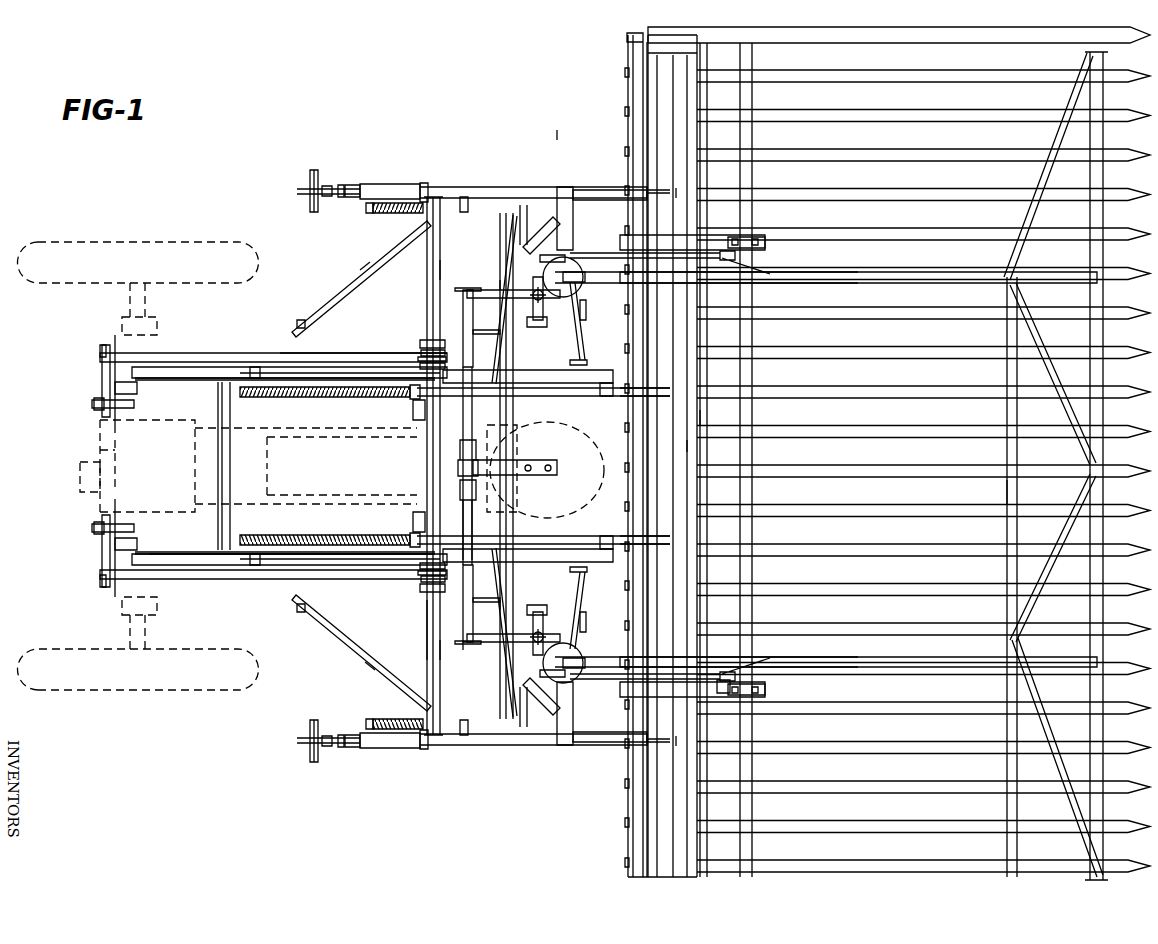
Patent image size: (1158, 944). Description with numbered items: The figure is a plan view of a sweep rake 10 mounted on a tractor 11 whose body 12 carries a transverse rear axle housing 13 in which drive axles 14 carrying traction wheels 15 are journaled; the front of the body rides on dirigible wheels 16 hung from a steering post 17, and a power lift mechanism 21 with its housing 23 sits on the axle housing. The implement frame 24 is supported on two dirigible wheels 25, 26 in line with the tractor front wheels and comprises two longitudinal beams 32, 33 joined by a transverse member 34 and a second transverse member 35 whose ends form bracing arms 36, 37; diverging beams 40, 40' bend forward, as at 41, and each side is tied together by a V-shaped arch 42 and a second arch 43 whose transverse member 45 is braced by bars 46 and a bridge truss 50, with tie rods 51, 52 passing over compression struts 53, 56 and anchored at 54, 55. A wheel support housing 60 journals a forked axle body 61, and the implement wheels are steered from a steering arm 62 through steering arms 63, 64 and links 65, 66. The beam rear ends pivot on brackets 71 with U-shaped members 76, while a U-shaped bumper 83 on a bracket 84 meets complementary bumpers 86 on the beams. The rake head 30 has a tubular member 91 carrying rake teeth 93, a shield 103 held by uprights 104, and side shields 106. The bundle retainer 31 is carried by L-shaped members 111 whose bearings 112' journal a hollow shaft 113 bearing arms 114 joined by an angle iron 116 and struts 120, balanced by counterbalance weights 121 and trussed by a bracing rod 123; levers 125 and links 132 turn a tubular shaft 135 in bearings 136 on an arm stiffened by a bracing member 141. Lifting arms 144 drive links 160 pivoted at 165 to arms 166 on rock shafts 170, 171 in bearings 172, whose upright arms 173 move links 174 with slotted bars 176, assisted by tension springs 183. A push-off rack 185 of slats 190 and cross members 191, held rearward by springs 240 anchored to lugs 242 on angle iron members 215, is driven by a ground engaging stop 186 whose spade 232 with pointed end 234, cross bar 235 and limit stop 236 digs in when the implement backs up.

The sweep rake 10 is at (574, 115).
The tractor 11 is at (310, 422).
The body 12 is at (175, 420).
The rear axle housing 13 is at (155, 335).
The drive axles 14 is at (140, 298).
The traction wheels 15 is at (140, 245).
The dirigible wheels 16 is at (575, 470).
The steering post 17 is at (545, 455).
The power lift mechanism 21 is at (130, 470).
The housing 23 is at (95, 490).
The frame 24 is at (353, 343).
The dirigible wheel 25 is at (585, 295).
The dirigible wheel 26 is at (585, 650).
The rake head 30 is at (620, 859).
The bundle retainer 31 is at (990, 496).
The beam 32 is at (222, 368).
The beam 33 is at (228, 575).
The transverse member 34 is at (235, 483).
The second transverse member 35 is at (460, 455).
The bracing arm 36 is at (427, 272).
The bracing arm 37 is at (427, 650).
The beam 40 is at (337, 274).
The beam 40' is at (345, 668).
The parallel member 41 is at (465, 200).
The V-shaped arch 42 is at (583, 360).
The second arch 43 is at (490, 255).
The transverse member 45 is at (572, 345).
The bars 46 is at (538, 228).
The bridge truss 50 is at (513, 338).
The tie rods 51 is at (390, 250).
The tie rods 52 is at (380, 368).
The compression struts 53 is at (490, 270).
The anchor 54 is at (300, 323).
The anchor 55 is at (255, 370).
The compression struts 56 is at (455, 384).
The wheel support housing 60 is at (540, 305).
The forked axle body 61 is at (555, 260).
The steering arm 62 is at (525, 476).
The steering arm 63 is at (505, 285).
The steering arm 64 is at (488, 650).
The link 65 is at (468, 360).
The link 66 is at (505, 592).
The brackets 71 is at (95, 343).
The U-shaped angle iron member 76 is at (105, 368).
The U-shaped bumper 83 is at (412, 412).
The bracket 84 is at (458, 478).
The complementary bumpers 86 is at (395, 400).
The tubular member 91 is at (630, 90).
The rake teeth 93 is at (885, 158).
The sheet iron shield 103 is at (680, 43).
The uprights 104 is at (640, 192).
The side shields 106 is at (880, 30).
The L-shaped angle iron members 111 is at (715, 240).
The bearings 112' is at (776, 469).
The hollow shaft 113 is at (748, 492).
The arms 114 is at (920, 283).
The transverse angle iron 116 is at (1092, 335).
The bracing struts 120 is at (1040, 215).
The counterbalance weights 121 is at (583, 320).
The bracing rod 123 is at (835, 283).
The levers 125 is at (745, 685).
The link 132 is at (700, 258).
The tubular shaft 135 is at (562, 187).
The bearings 136 is at (598, 200).
The bracing member 141 is at (523, 205).
The lifting arms 144 is at (108, 403).
The link 160 is at (203, 353).
The pivot 165 is at (425, 340).
The arms 166 is at (425, 360).
The rock shaft 170 is at (425, 290).
The rock shaft 171 is at (425, 628).
The bearings 172 is at (448, 471).
The upright arm 173 is at (422, 183).
The link 174 is at (478, 186).
The bars 176 is at (605, 395).
The tension springs 183 is at (285, 397).
The push-off rack 185 is at (720, 422).
The ground engaging stop 186 is at (346, 172).
The slats 190 is at (700, 445).
The cross members 191 is at (680, 195).
The angle iron member 215 is at (392, 180).
The spade 232 is at (325, 186).
The pointed end 234 is at (295, 201).
The cross bar 235 is at (312, 170).
The limit stop 236 is at (355, 185).
The springs 240 is at (398, 213).
The lugs 242 is at (373, 207).